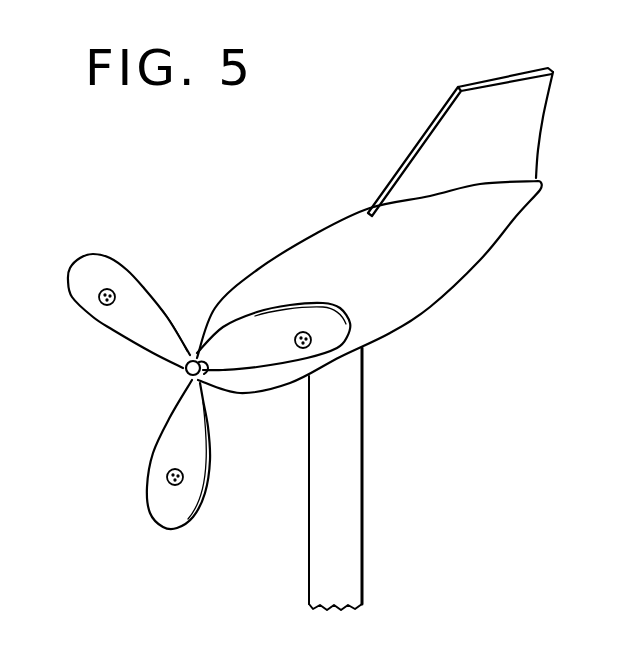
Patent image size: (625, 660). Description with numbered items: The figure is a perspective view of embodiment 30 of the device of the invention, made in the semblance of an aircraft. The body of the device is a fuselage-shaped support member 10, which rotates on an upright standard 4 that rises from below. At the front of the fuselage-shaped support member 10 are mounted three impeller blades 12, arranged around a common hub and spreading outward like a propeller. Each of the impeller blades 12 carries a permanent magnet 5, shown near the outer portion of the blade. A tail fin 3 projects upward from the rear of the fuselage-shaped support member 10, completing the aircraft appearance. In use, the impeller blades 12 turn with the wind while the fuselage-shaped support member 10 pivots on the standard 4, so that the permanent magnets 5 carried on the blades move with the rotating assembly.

The fuselage-shaped support member 10 is at (258, 287).
The tail fin 3 is at (422, 157).
The embodiment of device 30 is at (281, 188).
The impeller blades 12 is at (147, 350).
The permanent magnet 5 is at (100, 302).
The standard 4 is at (352, 522).